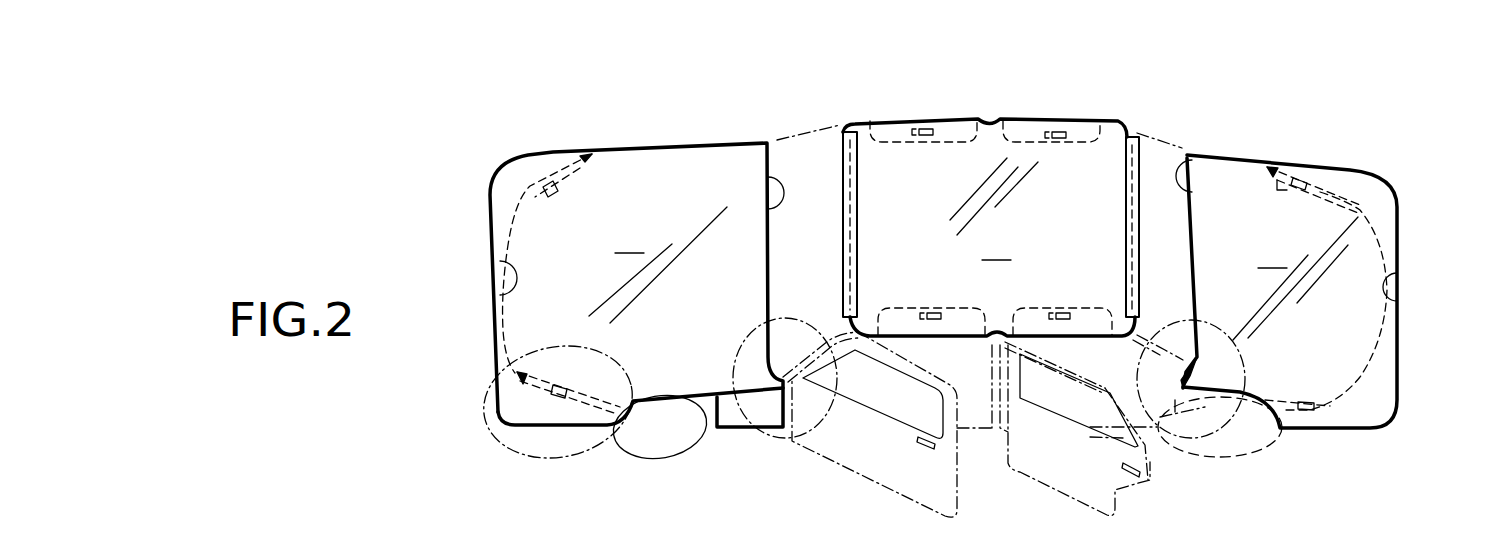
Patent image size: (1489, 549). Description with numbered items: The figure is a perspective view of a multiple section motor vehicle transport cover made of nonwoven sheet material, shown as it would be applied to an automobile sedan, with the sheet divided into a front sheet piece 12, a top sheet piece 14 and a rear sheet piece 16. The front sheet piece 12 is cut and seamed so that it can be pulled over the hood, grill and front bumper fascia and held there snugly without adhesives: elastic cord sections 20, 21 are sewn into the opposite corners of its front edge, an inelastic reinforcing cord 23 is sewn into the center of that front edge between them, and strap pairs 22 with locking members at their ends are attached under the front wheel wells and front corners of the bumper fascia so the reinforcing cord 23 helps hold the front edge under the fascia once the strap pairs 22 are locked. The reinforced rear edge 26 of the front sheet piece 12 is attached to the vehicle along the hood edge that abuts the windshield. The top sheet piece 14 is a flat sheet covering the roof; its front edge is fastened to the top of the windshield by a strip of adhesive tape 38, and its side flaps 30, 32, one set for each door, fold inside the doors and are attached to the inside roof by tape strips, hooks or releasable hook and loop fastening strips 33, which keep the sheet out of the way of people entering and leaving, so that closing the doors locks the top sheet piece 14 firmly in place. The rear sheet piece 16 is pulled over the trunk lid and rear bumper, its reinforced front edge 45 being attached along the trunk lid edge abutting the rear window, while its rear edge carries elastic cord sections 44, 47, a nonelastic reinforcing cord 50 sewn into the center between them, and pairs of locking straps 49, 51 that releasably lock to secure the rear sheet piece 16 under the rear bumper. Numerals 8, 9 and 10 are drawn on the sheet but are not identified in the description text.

The front body section 8 is at (500, 423).
The front door 9 is at (763, 437).
The rear door 10 is at (1207, 440).
The front sheet piece 12 is at (636, 285).
The top sheet piece 14 is at (979, 227).
The rear sheet piece 16 is at (1289, 291).
The elastic cord section 20 is at (523, 197).
The elastic cord section 21 is at (490, 400).
The strap pair 22 is at (563, 172).
The inelastic reinforcing cord 23 is at (500, 300).
The rear edge 26 is at (762, 193).
The side flap 30 is at (947, 127).
The side flap 32 is at (1035, 127).
The releasable hook and loop fastening strips 33 is at (920, 128).
The strip of adhesive tape 38 is at (840, 158).
The elastic cord section 44 is at (1377, 390).
The front edge 45 is at (1177, 147).
The elastic cord section 47 is at (1377, 177).
The pair of locking straps 49 is at (1310, 413).
The nonelastic reinforcing cord 50 is at (1383, 280).
The pair of locking straps 51 is at (1325, 187).